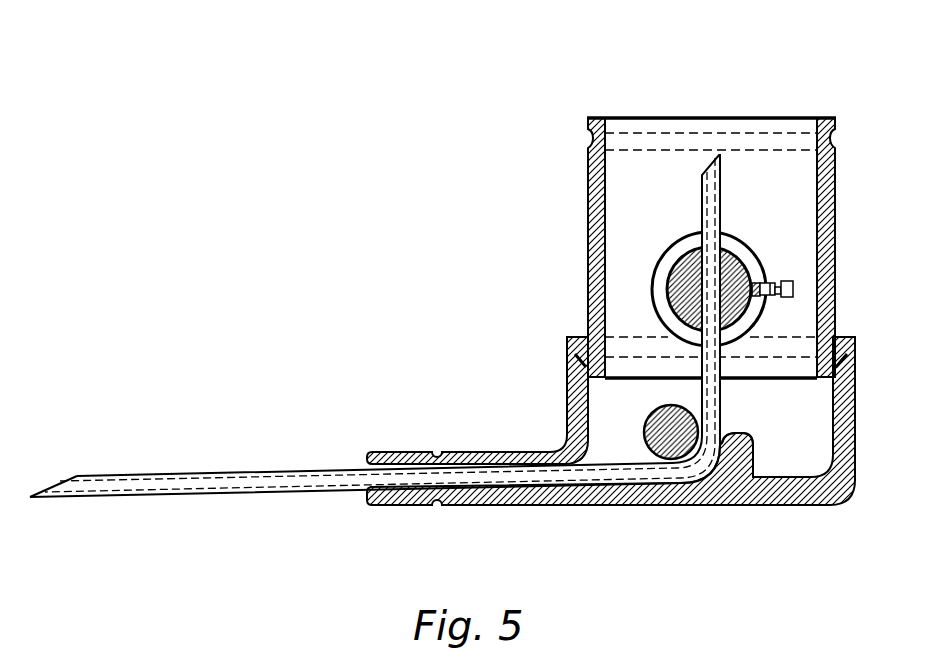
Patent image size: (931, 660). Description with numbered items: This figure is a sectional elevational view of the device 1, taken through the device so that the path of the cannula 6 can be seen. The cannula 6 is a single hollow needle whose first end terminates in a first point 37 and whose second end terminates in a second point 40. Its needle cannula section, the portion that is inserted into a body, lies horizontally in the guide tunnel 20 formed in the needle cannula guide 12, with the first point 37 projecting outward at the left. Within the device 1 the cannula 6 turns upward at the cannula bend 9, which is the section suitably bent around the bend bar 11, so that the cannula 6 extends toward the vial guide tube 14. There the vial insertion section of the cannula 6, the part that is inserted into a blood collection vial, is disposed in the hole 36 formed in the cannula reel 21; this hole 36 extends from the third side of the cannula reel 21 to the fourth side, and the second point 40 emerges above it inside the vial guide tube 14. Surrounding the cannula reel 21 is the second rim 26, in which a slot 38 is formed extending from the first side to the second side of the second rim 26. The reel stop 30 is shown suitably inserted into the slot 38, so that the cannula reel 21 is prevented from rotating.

The device 1 is at (344, 97).
The cannula 6 is at (147, 463).
The cannula bend 9 is at (722, 505).
The bend bar 11 is at (648, 422).
The needle cannula guide 12 is at (402, 458).
The vial guide tube 14 is at (588, 310).
The guide tunnel 20 is at (565, 505).
The cannula reel 21 is at (682, 270).
The second rim 26 is at (752, 243).
The reel stop 30 is at (794, 288).
The hole 36 is at (748, 318).
The first point 37 is at (48, 490).
The slot 38 is at (758, 281).
The second point 40 is at (716, 156).